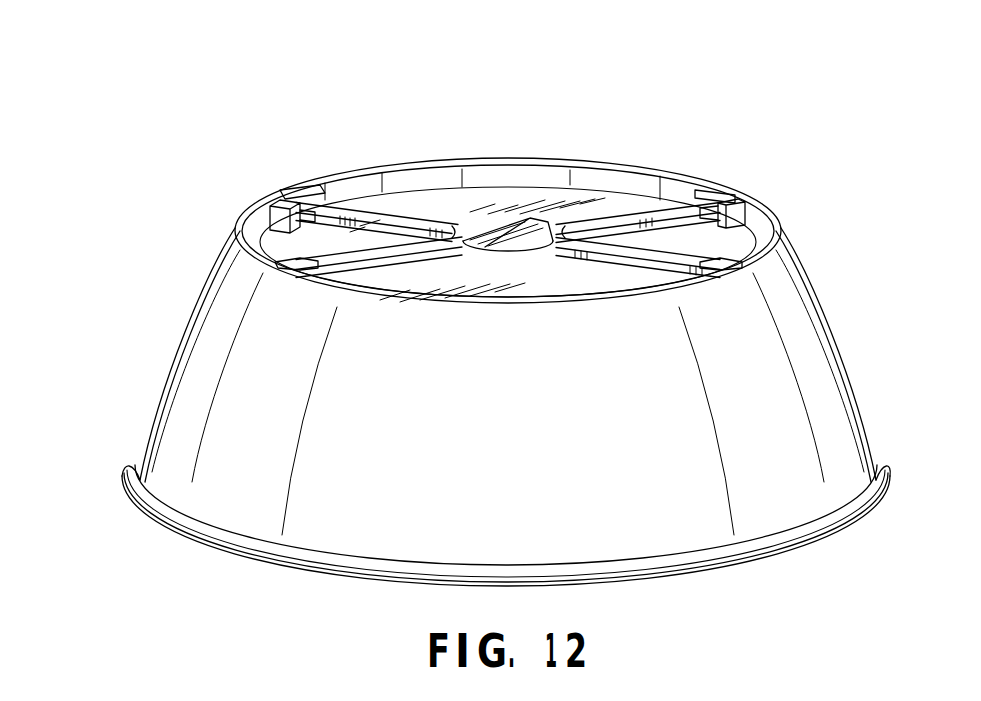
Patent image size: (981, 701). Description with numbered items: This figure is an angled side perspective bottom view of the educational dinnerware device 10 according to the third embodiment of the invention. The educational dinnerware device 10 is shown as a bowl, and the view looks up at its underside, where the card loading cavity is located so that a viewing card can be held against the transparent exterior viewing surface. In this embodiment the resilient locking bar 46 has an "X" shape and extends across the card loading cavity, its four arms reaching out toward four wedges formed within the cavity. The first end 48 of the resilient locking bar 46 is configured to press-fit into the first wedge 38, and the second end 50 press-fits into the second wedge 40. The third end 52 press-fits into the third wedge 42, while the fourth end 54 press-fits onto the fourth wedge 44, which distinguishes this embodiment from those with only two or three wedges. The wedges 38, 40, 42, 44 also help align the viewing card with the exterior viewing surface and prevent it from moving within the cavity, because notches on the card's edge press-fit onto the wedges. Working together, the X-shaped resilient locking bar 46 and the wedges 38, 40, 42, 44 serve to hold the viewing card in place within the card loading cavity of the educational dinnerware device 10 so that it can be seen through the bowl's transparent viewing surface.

The educational dinnerware device 10 is at (128, 248).
The first wedge 38 is at (297, 198).
The second wedge 40 is at (740, 258).
The third wedge 42 is at (738, 207).
The fourth wedge 44 is at (287, 263).
The resilient locking bar 46 is at (580, 227).
The first end 48 is at (305, 213).
The second end 50 is at (687, 257).
The third end 52 is at (708, 207).
The fourth end 54 is at (340, 268).